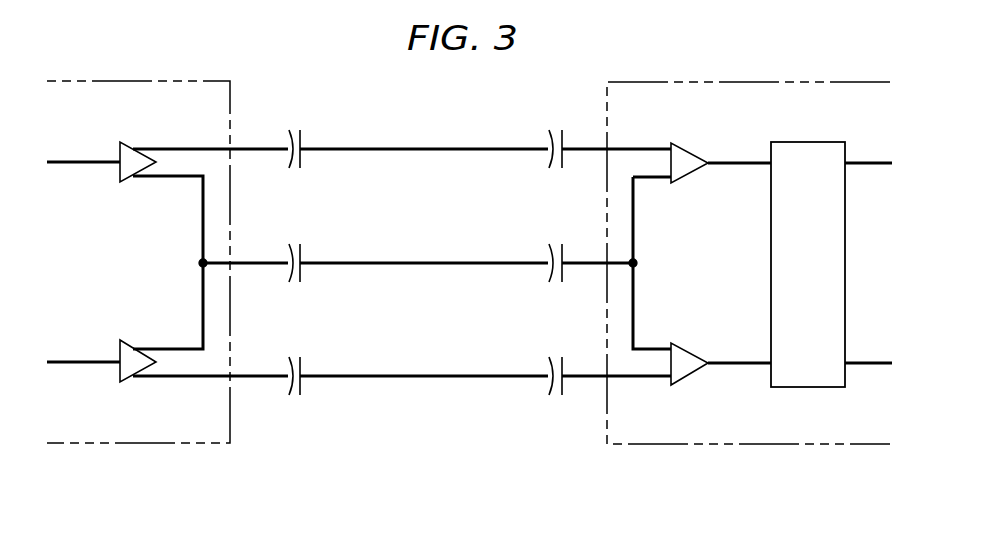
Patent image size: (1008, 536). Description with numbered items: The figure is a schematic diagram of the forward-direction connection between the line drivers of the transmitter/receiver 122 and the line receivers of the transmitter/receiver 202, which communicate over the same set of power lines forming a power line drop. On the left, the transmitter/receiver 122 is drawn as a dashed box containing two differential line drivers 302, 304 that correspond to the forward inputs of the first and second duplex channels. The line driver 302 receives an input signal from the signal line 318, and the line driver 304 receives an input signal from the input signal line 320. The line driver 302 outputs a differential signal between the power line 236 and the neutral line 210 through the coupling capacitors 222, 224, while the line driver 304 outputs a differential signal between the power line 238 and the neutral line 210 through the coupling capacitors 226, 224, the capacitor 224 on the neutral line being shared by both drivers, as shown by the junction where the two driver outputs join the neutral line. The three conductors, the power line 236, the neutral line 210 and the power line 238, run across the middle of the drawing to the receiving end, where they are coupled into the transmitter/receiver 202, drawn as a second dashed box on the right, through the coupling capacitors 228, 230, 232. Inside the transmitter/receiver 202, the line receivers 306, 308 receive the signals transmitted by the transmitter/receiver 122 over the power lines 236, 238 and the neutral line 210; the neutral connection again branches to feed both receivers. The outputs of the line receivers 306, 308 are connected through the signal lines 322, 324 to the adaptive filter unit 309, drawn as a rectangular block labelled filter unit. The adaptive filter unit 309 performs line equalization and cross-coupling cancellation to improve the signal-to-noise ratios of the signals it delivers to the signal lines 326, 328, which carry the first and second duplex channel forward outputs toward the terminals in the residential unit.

The transmitter/receiver 122 is at (195, 443).
The transmitter/receiver 202 is at (682, 444).
The neutral line 210 is at (415, 262).
The coupling capacitor 222 is at (300, 128).
The coupling capacitor 224 is at (300, 242).
The coupling capacitor 226 is at (300, 356).
The coupling capacitor 228 is at (562, 128).
The coupling capacitor 230 is at (562, 242).
The coupling capacitor 232 is at (562, 356).
The power line 236 is at (415, 148).
The power line 238 is at (418, 375).
The differential line driver 302 is at (125, 142).
The differential line driver 304 is at (125, 382).
The line receiver 306 is at (718, 133).
The line receiver 308 is at (687, 381).
The adaptive filter unit 309 is at (800, 142).
The signal line 318 is at (93, 160).
The input signal line 320 is at (93, 360).
The signal line 322 is at (740, 165).
The signal line 324 is at (743, 361).
The signal line 326 is at (876, 162).
The signal line 328 is at (872, 362).